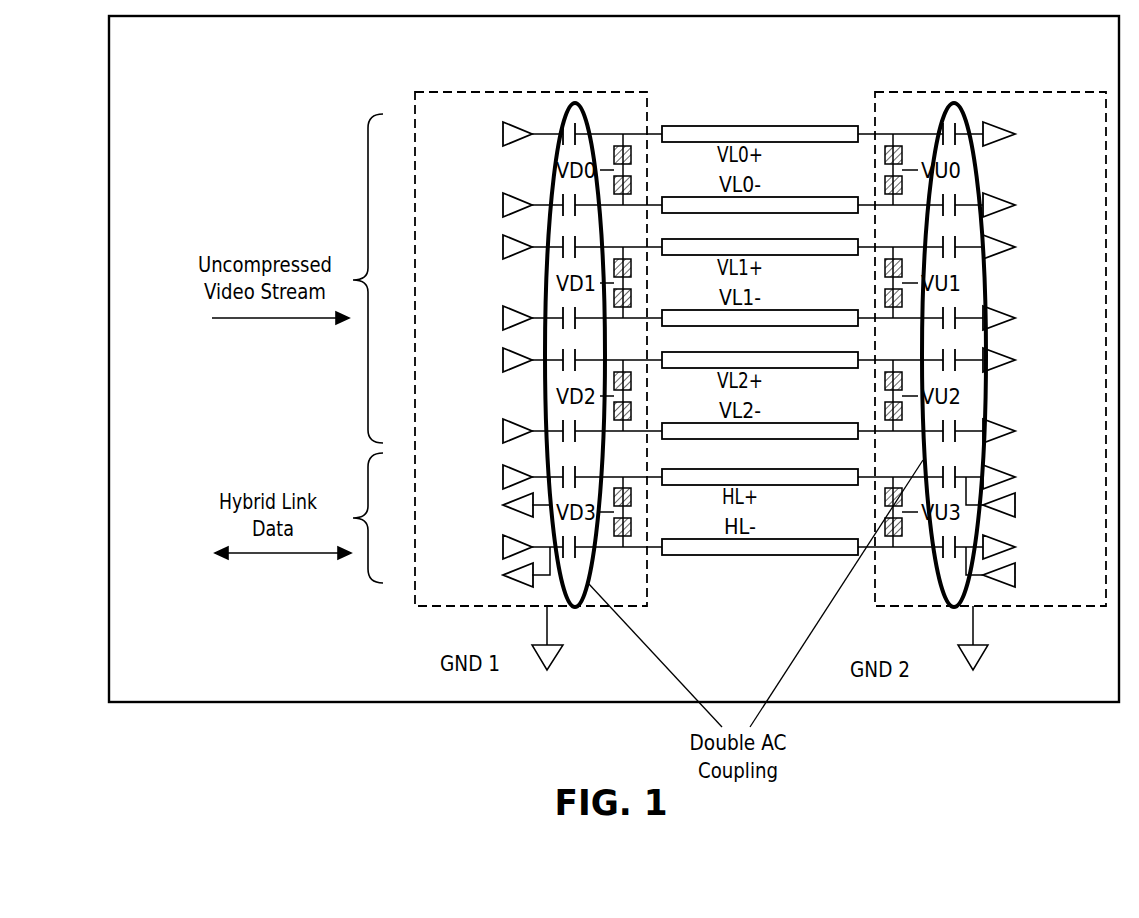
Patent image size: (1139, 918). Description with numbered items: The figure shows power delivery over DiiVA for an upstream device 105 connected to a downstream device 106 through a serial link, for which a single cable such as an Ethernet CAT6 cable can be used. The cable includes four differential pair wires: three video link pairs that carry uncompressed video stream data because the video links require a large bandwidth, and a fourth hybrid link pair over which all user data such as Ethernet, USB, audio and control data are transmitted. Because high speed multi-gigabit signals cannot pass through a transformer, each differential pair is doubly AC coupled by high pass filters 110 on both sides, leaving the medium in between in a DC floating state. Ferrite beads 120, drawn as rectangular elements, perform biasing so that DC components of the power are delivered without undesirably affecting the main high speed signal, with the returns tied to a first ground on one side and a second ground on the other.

The upstream device 105 is at (428, 100).
The downstream device 106 is at (933, 97).
The HPF (high pass filter) 110 is at (943, 245).
The ferrite bead 120 is at (613, 488).